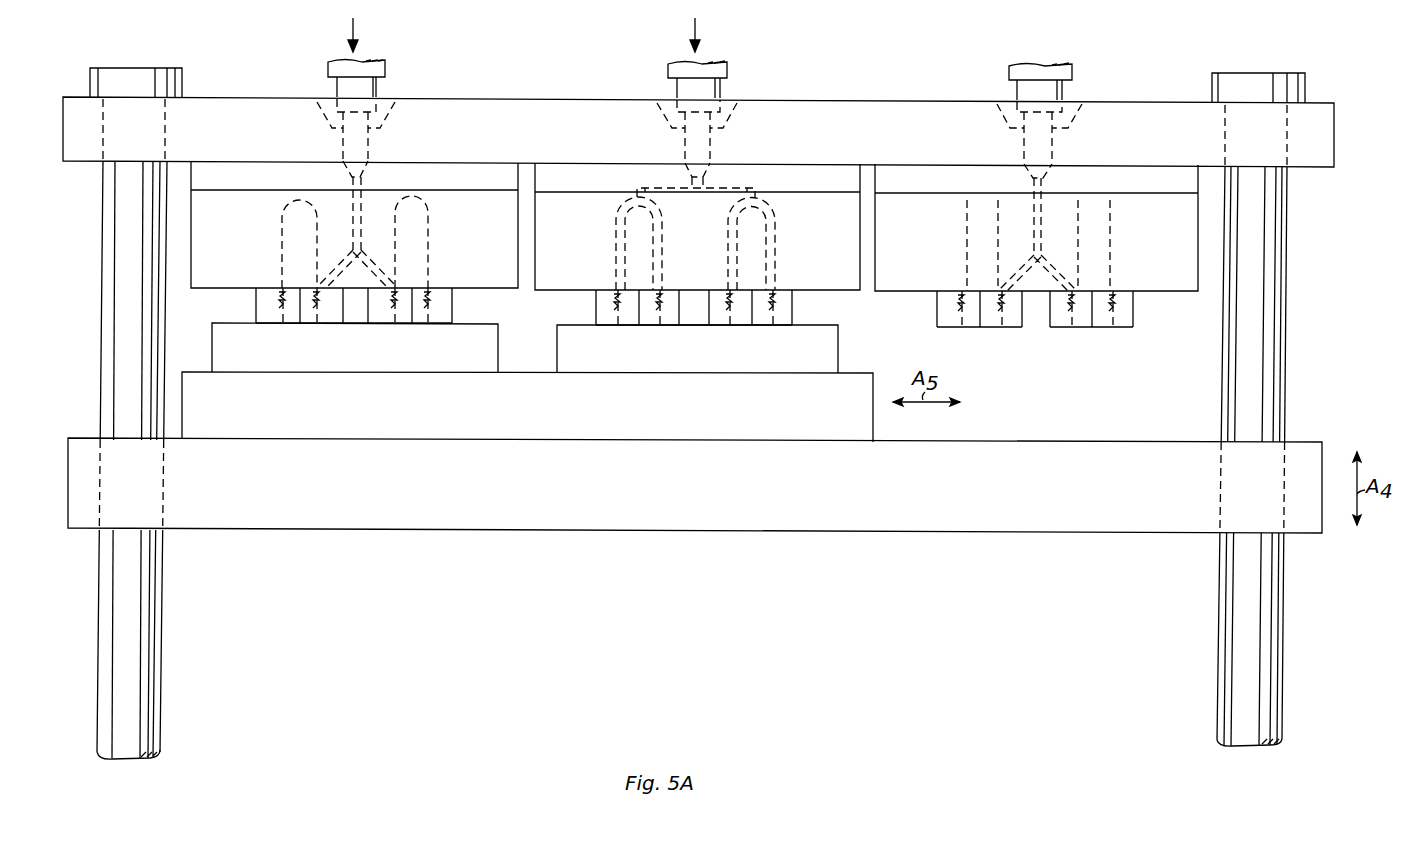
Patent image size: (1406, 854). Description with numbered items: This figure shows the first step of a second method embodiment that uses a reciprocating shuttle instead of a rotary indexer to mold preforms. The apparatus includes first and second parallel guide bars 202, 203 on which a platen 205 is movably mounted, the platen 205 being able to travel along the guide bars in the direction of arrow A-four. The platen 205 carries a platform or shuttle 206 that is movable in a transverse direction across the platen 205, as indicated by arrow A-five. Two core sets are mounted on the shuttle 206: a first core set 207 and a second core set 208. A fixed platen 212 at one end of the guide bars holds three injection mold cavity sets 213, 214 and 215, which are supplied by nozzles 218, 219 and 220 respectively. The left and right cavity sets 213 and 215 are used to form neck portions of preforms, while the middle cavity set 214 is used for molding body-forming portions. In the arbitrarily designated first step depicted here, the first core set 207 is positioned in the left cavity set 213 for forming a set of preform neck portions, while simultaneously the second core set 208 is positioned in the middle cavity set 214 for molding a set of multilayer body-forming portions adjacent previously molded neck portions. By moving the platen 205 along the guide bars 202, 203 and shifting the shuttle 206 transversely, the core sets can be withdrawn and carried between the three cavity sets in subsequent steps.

The first guide bar 202 is at (157, 648).
The second guide bar 203 is at (1225, 633).
The platen 205 is at (1167, 499).
The shuttle 206 is at (550, 422).
The first core set 207 is at (376, 367).
The second core set 208 is at (713, 367).
The fixed platen 212 is at (1173, 146).
The left cavity set 213 is at (487, 262).
The middle cavity set 214 is at (837, 260).
The right cavity set 215 is at (1173, 260).
The nozzle 218 is at (385, 72).
The nozzle 219 is at (727, 73).
The nozzle 220 is at (1072, 75).